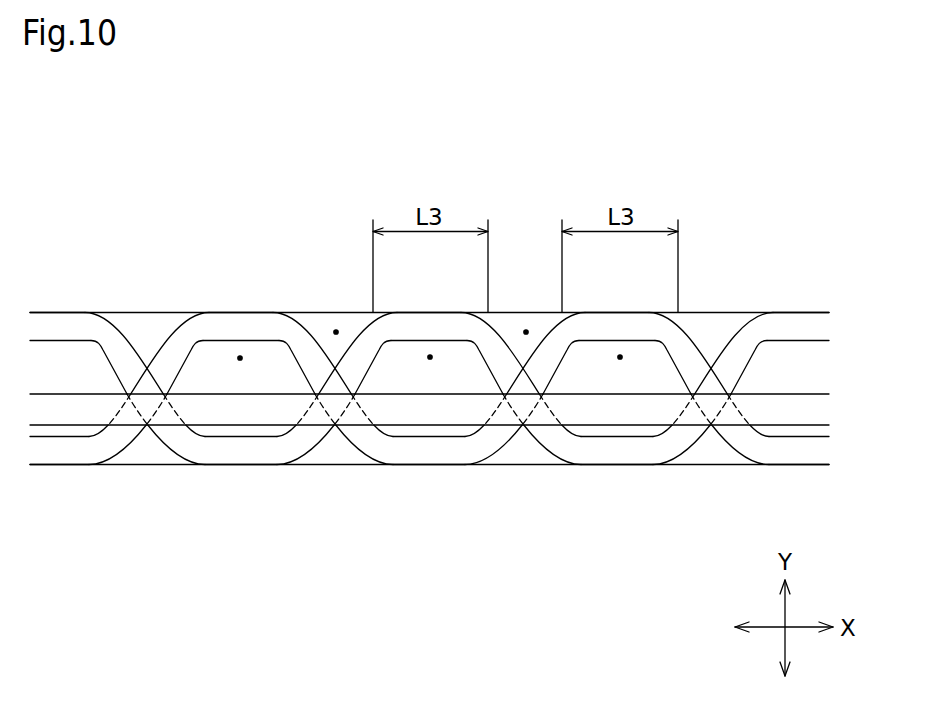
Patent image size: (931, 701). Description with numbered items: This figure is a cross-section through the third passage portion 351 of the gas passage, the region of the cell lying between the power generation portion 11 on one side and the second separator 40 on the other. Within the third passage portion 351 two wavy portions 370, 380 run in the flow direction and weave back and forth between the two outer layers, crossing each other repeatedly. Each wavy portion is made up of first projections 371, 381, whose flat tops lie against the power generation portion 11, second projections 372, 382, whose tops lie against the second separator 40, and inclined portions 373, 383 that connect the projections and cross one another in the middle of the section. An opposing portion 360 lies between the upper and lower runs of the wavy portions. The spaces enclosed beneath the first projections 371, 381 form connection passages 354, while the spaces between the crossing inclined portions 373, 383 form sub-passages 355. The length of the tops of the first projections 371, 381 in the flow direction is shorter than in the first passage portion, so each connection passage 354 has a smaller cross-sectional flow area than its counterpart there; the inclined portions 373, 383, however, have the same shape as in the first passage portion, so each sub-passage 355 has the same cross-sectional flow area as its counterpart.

The power generation portion 11 is at (709, 313).
The second separator 40 is at (706, 464).
The third passage portion 351 is at (750, 223).
The connection passage 354 is at (620, 357).
The sub-passage 355 is at (526, 332).
The opposing portion 360 is at (57, 427).
The wavy portion 370 is at (120, 332).
The first projection 371 is at (438, 318).
The second projection 372 is at (615, 455).
The inclined portion 373 is at (743, 374).
The wavy portion 380 is at (168, 332).
The first projection 381 is at (632, 318).
The second projection 382 is at (430, 455).
The inclined portion 383 is at (681, 374).